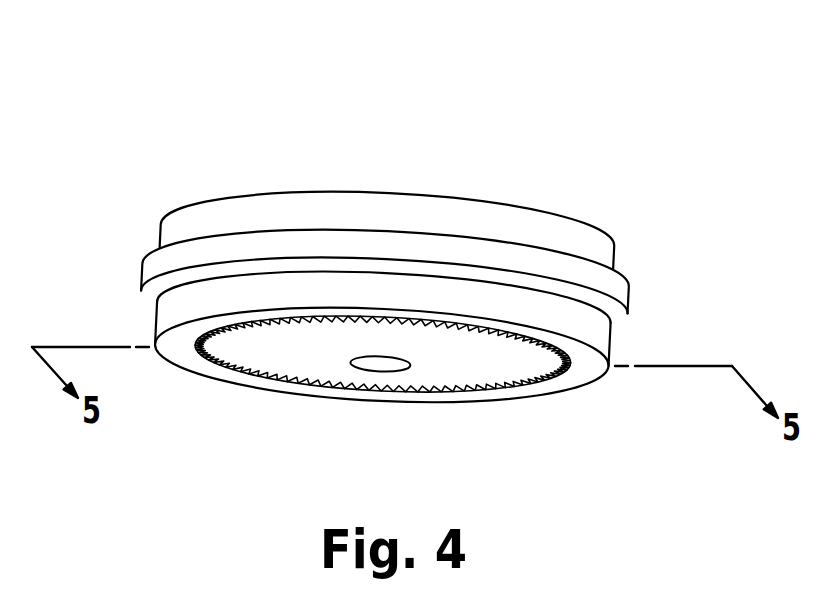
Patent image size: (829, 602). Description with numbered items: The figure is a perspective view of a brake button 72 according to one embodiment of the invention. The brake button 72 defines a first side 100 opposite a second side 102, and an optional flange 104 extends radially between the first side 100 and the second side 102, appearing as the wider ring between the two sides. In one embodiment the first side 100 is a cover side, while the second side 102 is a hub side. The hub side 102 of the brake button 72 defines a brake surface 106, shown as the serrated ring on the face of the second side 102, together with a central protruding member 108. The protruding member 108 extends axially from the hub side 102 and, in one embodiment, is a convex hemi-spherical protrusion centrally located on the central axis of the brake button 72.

The brake button 72 is at (402, 125).
The first side 100 is at (573, 219).
The flange 104 is at (620, 285).
The second side 102 is at (588, 372).
The brake surface 106 is at (205, 360).
The protruding member 108 is at (370, 365).